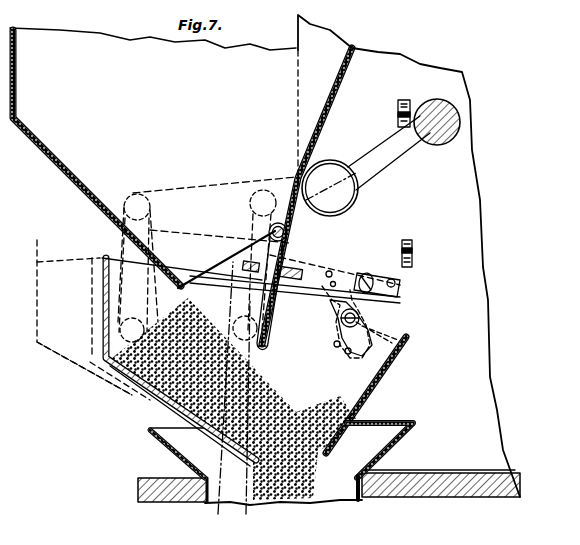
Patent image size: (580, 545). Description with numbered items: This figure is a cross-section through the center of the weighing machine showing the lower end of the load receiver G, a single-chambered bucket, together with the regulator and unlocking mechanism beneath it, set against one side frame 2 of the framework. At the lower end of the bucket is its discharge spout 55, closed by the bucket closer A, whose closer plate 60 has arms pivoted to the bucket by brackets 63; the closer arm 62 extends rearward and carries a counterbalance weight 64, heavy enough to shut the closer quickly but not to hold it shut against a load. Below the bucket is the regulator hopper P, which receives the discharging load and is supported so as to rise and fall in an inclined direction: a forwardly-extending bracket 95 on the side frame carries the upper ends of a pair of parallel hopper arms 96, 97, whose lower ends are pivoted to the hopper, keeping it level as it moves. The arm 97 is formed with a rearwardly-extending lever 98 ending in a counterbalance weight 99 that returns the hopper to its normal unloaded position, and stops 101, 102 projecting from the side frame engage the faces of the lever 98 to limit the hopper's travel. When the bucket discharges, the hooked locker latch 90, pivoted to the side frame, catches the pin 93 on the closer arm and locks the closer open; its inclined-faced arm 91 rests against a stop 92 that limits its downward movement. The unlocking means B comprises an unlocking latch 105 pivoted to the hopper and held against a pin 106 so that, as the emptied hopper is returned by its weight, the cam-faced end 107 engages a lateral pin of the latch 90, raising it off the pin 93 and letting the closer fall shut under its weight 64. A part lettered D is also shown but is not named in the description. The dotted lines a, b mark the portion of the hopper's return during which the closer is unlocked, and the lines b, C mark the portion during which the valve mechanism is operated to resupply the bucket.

The side frame 2 is at (470, 300).
The load receiver G is at (62, 145).
The regulator hopper P is at (149, 353).
The line c C is at (125, 392).
The bracket 95 is at (190, 195).
The hopper arm 96 is at (122, 238).
The hopper arm 97 is at (252, 212).
The discharge spout 55 is at (194, 288).
The closer arm 62 is at (262, 290).
The bracket 63 is at (292, 228).
The counterbalance weight 64 is at (359, 190).
The lever 98 is at (406, 146).
The counterbalance weight 99 is at (437, 136).
The stop 102 is at (398, 116).
The stop 101 is at (413, 254).
The closer plate 60 is at (276, 300).
The bucket closer A is at (267, 351).
The pin 93 is at (286, 266).
The locker latch 90 is at (315, 310).
The cam-faced end 107 is at (343, 278).
The inclined-faced arm 91 is at (401, 292).
The stop 92 is at (397, 282).
The cylinder end D is at (366, 287).
The unlocking means B is at (342, 322).
The unlocking latch 105 is at (362, 314).
The pin 106 is at (347, 355).
The line a is at (244, 418).
The line b is at (219, 398).